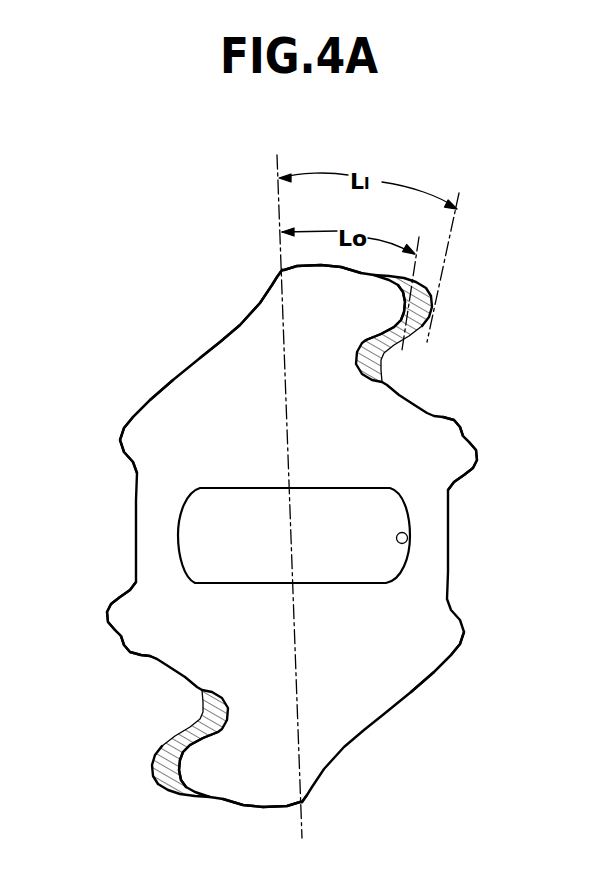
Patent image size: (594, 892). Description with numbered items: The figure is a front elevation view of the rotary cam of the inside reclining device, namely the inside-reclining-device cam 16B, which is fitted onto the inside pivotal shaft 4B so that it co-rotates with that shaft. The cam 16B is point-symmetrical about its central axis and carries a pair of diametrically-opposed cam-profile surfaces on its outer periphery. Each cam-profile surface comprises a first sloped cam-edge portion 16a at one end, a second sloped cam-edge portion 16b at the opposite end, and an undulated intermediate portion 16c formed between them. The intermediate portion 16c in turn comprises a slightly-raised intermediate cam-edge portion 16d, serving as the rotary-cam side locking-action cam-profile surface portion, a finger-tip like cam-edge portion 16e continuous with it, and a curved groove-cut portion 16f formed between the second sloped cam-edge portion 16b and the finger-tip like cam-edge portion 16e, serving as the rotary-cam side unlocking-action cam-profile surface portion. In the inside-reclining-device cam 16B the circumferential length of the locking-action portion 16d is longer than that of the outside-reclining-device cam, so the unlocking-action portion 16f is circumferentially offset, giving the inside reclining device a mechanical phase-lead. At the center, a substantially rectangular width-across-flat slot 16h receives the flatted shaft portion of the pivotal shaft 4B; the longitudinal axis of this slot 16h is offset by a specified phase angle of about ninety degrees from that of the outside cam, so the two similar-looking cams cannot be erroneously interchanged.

The inside-reclining-device cam 16B is at (150, 518).
The first sloped cam-edge portion 16a is at (132, 415).
The second sloped cam-edge portion 16b is at (118, 630).
The undulated intermediate portion 16c is at (284, 309).
The intermediate cam-edge portion 16d is at (300, 266).
The finger-tip like cam-edge portion 16e is at (158, 776).
The curved groove-cut portion 16f is at (171, 729).
The slot 16h is at (396, 549).
The inside pivotal shaft 4B is at (385, 567).